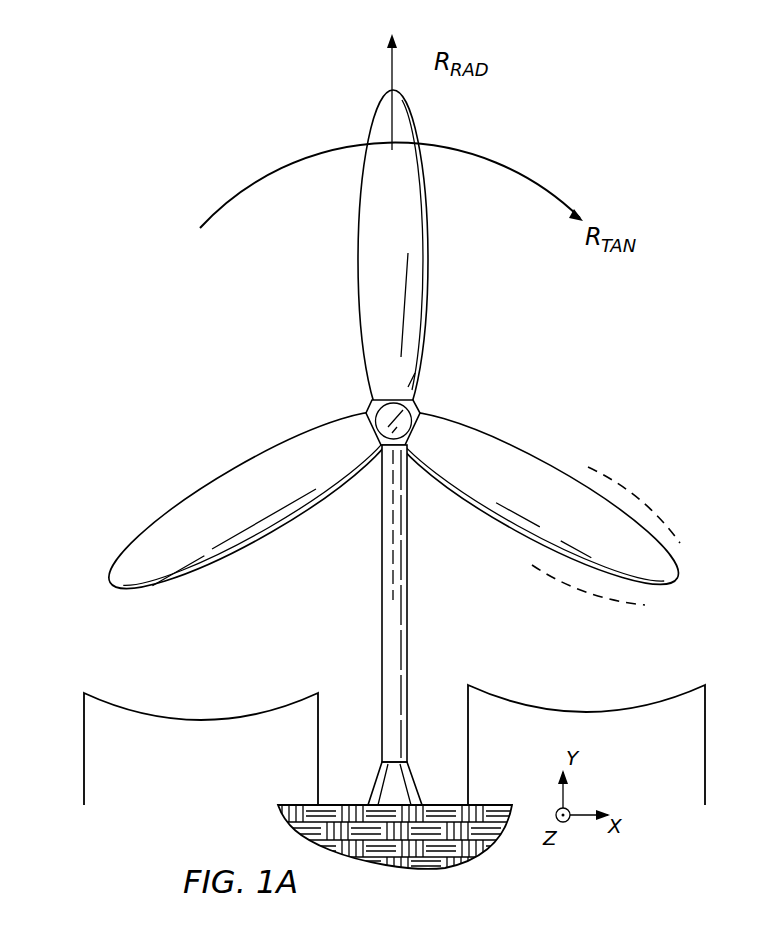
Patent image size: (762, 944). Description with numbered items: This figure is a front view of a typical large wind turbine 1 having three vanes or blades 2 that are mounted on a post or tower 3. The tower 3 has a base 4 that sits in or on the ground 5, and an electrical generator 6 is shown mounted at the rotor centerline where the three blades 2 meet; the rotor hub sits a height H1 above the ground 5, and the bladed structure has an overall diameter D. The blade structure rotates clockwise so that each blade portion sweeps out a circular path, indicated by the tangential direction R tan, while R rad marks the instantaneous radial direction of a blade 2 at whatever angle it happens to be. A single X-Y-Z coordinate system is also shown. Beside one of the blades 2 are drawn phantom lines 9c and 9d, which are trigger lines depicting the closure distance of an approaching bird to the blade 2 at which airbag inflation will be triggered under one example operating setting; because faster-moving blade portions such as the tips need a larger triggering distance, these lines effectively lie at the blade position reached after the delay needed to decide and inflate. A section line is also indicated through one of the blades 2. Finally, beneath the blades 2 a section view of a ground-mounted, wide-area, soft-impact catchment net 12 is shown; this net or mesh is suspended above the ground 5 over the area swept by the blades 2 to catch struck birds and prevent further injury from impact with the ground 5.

The wind turbine 1 is at (283, 172).
The blade 2 is at (418, 137).
The tower 3 is at (407, 607).
The base 4 is at (417, 780).
The ground 5 is at (485, 802).
The electrical generator 6 is at (418, 403).
The phantom line 9c is at (637, 500).
The phantom line 9d is at (585, 590).
The catchment net 12 is at (207, 720).